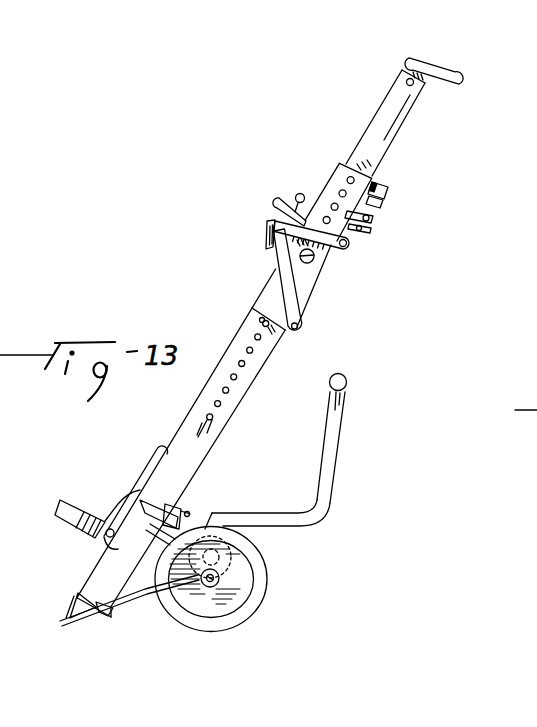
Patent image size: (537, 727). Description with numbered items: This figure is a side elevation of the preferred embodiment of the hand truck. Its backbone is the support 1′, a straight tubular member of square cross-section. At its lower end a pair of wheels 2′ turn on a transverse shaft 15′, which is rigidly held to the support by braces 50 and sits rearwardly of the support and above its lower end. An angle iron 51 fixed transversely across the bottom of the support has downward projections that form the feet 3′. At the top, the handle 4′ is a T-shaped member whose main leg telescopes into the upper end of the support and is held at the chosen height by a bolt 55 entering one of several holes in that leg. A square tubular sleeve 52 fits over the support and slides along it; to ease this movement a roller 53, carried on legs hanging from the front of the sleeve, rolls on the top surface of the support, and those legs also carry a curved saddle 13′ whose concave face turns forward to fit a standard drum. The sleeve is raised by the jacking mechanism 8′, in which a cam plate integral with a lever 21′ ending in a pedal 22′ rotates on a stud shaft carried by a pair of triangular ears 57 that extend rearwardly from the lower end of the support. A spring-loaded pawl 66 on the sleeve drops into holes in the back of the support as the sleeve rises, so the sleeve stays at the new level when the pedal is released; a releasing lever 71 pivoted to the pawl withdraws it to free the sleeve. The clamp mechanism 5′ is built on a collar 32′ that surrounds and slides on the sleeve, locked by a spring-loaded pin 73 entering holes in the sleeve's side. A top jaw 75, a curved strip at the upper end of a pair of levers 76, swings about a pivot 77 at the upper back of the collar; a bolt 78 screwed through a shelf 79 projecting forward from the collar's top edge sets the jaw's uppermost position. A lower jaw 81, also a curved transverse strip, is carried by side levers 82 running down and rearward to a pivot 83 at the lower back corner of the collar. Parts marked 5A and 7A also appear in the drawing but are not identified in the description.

The support 1′ is at (376, 113).
The wheels 2′ is at (280, 590).
The feet 3′ is at (64, 622).
The handle 4′ is at (462, 72).
The clamp mechanism 5′ is at (263, 269).
The flange 5A is at (147, 480).
The locking pin 7A is at (243, 360).
The jacking mechanism 8′ is at (332, 507).
The curved saddle 13′ is at (73, 501).
The transverse shaft 15′ is at (222, 582).
The lever 21′ is at (340, 436).
The pedal 22′ is at (349, 383).
The collar 32′ is at (301, 293).
The braces 50 is at (206, 528).
The angle iron 51 is at (88, 599).
The tubular sleeve 52 is at (215, 448).
The roller 53 is at (105, 548).
The bolt 55 is at (414, 82).
The ears 57 is at (150, 600).
The spring-loaded pawl 66 is at (388, 193).
The releasing lever 71 is at (378, 238).
The spring-loaded pin 73 is at (311, 264).
The top jaw 75 is at (274, 224).
The levers 76 is at (340, 258).
The pivot 77 is at (352, 246).
The bolt 78 is at (300, 193).
The shelf 79 is at (275, 202).
The lower jaw 81 is at (266, 237).
The side levers 82 is at (283, 283).
The pivot 83 is at (300, 330).